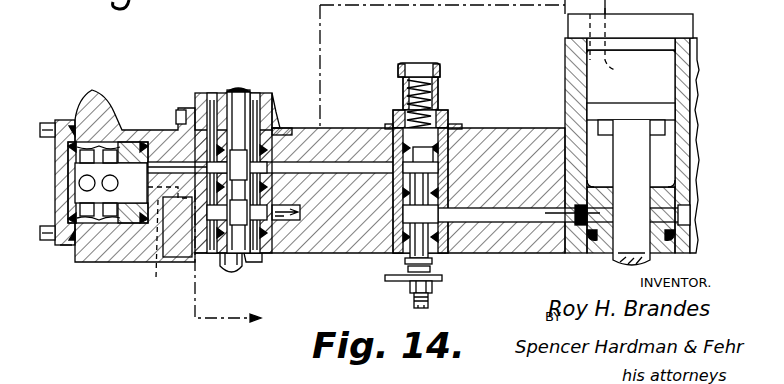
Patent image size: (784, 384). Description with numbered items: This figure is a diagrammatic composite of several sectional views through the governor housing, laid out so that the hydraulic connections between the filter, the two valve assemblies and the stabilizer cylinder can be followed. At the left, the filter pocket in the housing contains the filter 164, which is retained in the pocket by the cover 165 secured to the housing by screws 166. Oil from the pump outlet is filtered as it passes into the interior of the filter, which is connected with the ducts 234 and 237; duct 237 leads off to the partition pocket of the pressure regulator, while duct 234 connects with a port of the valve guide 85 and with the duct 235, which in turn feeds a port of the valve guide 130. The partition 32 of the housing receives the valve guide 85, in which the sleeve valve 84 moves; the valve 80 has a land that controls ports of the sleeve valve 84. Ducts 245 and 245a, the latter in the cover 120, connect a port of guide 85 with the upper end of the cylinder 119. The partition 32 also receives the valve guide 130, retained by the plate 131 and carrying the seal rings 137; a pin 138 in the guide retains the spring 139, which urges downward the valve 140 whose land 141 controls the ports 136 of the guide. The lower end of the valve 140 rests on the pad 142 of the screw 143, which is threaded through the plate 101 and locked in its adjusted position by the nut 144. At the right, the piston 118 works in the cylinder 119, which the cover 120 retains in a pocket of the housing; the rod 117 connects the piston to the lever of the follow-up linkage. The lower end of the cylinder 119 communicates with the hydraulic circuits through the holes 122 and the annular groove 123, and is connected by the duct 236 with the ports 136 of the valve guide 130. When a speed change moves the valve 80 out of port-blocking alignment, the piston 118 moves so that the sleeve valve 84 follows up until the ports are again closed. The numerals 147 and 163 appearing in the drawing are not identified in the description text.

The partition 32 is at (332, 255).
The valve 80 is at (246, 88).
The sleeve valve 84 is at (252, 258).
The valve guide 85 is at (272, 128).
The plate 101 is at (400, 282).
The rod 117 is at (650, 166).
The piston 118 is at (668, 112).
The cylinder 119 is at (699, 86).
The cover 120 is at (690, 28).
The holes 122 is at (690, 212).
The annular groove 123 is at (690, 220).
The valve guide 130 is at (403, 90).
The plate 131 is at (452, 126).
The ports 136 is at (380, 240).
The seal rings 137 is at (449, 152).
The pin 138 is at (422, 72).
The spring 139 is at (432, 92).
The valve 140 is at (432, 262).
The land 141 is at (426, 218).
The pad 142 is at (430, 272).
The screw 143 is at (430, 305).
The nut 144 is at (432, 290).
The conduit 147 is at (631, 7).
The bearing block 163 is at (104, 222).
The filter 164 is at (70, 192).
The cover 165 is at (68, 250).
The screws 166 is at (45, 240).
The duct 234 is at (157, 163).
The duct 235 is at (345, 165).
The duct 236 is at (546, 214).
The duct 237 is at (246, 256).
The duct 245 is at (300, 212).
The duct 245a is at (624, 48).